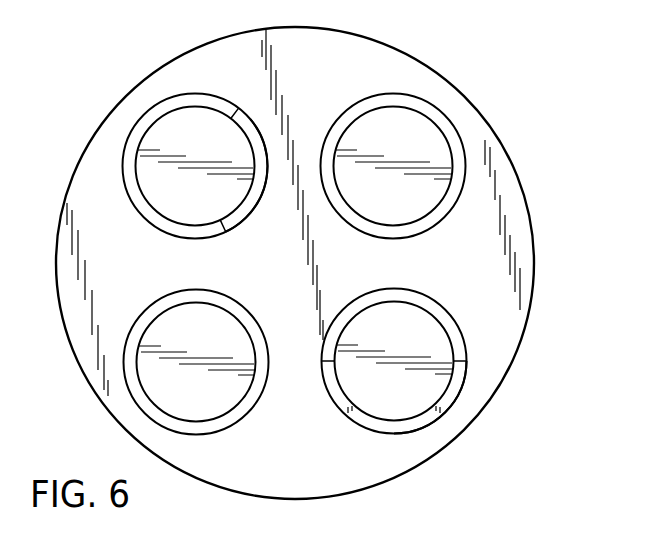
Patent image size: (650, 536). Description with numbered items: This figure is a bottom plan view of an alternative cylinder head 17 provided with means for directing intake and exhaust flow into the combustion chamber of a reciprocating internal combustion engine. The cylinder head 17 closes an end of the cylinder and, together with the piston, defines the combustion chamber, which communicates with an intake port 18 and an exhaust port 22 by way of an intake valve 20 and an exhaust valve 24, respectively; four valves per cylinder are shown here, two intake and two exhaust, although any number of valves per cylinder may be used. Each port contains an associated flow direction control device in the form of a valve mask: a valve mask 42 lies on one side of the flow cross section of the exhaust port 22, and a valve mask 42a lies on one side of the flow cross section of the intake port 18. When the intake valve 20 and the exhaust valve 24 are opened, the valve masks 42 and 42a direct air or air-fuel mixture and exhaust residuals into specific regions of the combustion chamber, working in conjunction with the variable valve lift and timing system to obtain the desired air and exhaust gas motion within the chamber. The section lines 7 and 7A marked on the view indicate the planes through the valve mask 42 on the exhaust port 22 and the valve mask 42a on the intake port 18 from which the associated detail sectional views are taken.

The cylinder head 17 is at (367, 62).
The intake port 18 is at (448, 133).
The intake valve 20 is at (427, 133).
The exhaust port 22 is at (140, 127).
The exhaust valve 24 is at (175, 127).
The valve mask 42 is at (262, 183).
The valve mask 42a is at (453, 392).
The section line 7- 7 is at (177, 93).
The section line 7A- 7A is at (440, 297).